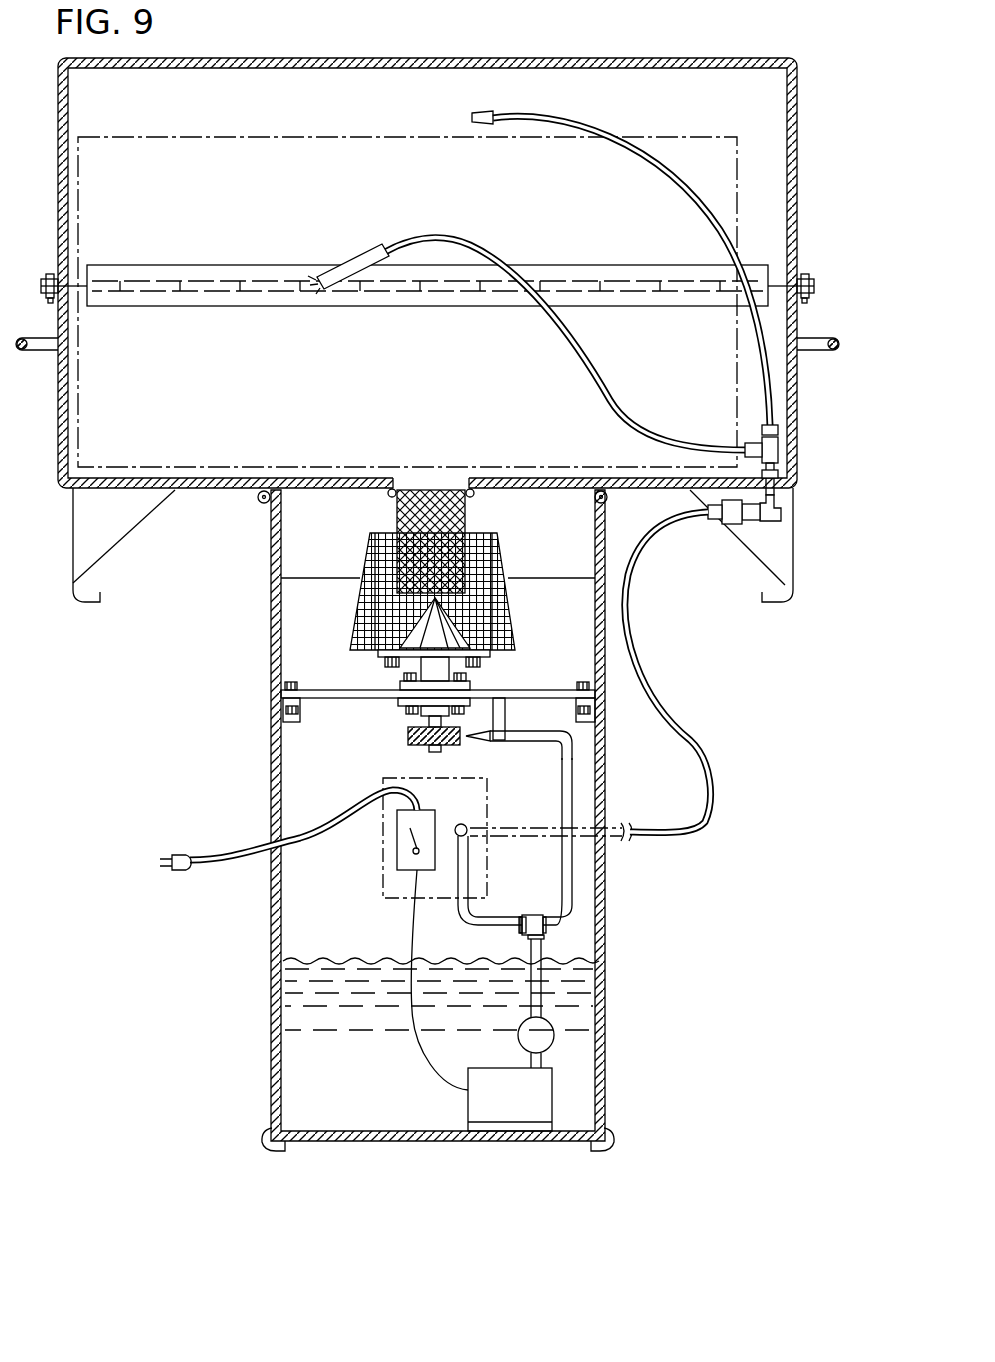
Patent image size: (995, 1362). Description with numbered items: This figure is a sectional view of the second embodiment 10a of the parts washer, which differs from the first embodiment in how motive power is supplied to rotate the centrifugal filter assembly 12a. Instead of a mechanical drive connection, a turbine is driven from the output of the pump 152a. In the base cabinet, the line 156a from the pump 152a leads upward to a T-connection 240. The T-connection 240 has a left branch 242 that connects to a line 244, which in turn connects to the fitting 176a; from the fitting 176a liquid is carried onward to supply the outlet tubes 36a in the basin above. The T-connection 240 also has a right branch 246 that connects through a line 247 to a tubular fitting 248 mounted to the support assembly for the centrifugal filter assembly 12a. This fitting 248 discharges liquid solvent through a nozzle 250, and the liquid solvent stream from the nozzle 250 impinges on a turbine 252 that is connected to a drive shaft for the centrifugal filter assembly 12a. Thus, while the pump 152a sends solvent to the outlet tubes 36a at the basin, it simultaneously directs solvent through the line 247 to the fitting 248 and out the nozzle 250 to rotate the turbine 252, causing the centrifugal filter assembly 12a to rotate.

The second embodiment 10a is at (728, 610).
The centrifugal filter assembly 12a is at (341, 627).
The outlet tubes 36a is at (662, 163).
The fitting 176a is at (467, 826).
The T-connection 240 is at (540, 900).
The left branch 242 is at (520, 925).
The line 244 is at (445, 880).
The right branch 246 is at (546, 928).
The line 247 is at (588, 848).
The tubular fitting 248 is at (578, 734).
The nozzle 250 is at (482, 746).
The turbine 252 is at (405, 735).
The line 156a is at (540, 994).
The pump 152a is at (553, 1040).